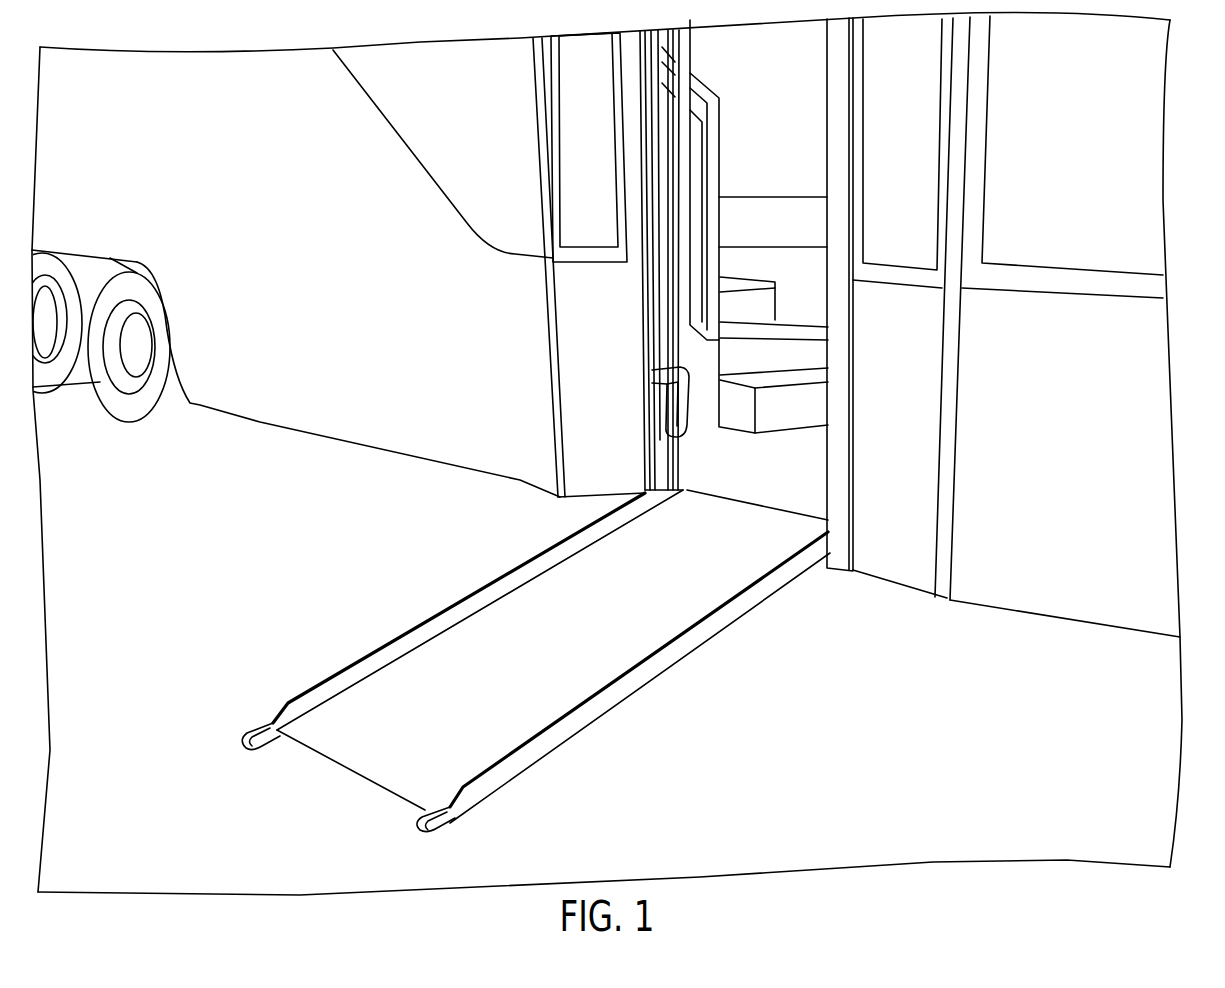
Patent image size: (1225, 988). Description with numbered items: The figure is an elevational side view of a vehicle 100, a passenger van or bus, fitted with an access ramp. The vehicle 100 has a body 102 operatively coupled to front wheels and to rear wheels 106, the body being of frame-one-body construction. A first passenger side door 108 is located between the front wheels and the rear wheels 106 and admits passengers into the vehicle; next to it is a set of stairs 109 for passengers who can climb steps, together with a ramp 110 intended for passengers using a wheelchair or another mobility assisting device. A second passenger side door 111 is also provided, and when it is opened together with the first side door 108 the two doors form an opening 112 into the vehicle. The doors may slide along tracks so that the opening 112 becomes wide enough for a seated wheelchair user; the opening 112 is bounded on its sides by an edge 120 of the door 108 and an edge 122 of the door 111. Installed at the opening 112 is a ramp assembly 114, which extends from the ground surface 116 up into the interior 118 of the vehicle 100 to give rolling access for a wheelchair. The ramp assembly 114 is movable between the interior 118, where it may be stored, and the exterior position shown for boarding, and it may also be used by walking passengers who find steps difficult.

The vehicle 100 is at (1158, 363).
The body 102 is at (350, 443).
The rear wheels 106 is at (143, 405).
The first passenger side door 108 is at (887, 562).
The set of stairs 109 is at (738, 282).
The ramp 110 is at (694, 410).
The second passenger side door 111 is at (556, 505).
The opening 112 is at (800, 497).
The ramp assembly 114 is at (559, 657).
The ground surface 116 is at (758, 818).
The interior 118 is at (778, 121).
The edge of the door 108 120 is at (846, 411).
The edge of the door 111 122 is at (623, 323).